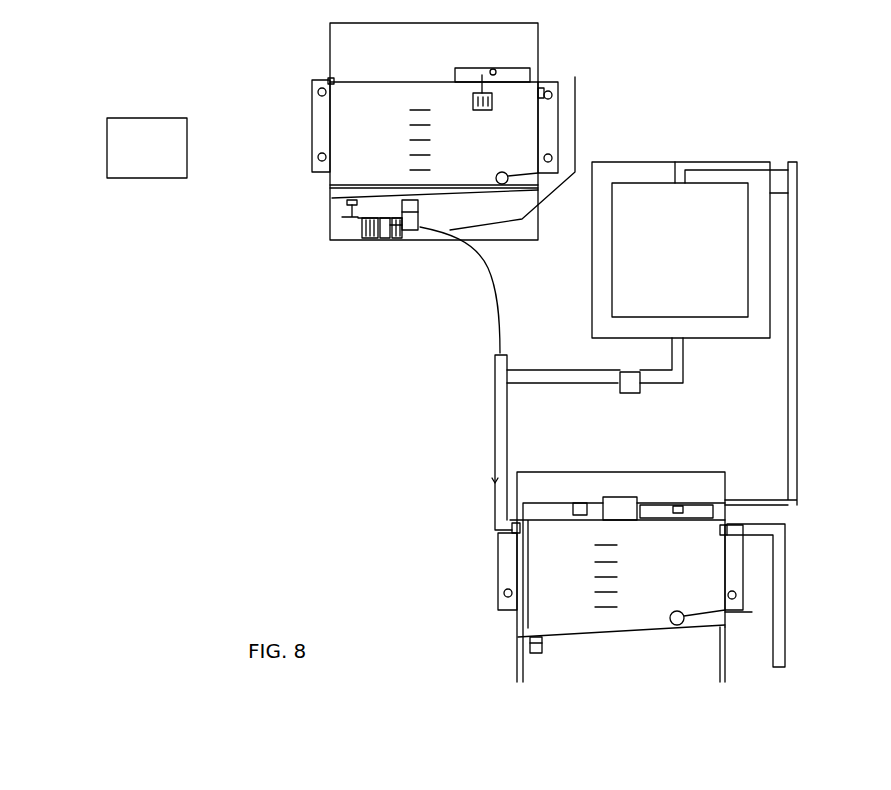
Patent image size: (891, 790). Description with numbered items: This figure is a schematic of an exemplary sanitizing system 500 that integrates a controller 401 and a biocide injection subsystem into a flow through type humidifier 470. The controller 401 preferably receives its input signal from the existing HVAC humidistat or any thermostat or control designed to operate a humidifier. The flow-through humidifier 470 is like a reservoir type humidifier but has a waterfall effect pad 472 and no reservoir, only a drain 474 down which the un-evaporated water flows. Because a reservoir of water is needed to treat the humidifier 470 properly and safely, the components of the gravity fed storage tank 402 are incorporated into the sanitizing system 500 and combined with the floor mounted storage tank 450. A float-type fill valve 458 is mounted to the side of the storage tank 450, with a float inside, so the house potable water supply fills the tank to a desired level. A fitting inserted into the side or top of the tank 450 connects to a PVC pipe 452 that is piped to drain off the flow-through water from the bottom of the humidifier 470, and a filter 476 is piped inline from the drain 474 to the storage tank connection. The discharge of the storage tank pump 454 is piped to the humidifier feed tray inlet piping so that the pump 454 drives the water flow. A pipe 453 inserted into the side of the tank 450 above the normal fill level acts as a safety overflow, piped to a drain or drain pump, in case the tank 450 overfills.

The controller 401 is at (140, 123).
The gravity fed storage tank 402 is at (583, 38).
The sanitizing system 500 is at (740, 82).
The flow through type humidifier 470 is at (740, 155).
The waterfall effect pad 472 is at (730, 280).
The drain 474 is at (680, 353).
The filter 476 is at (627, 393).
The storage tank pump 454 is at (620, 507).
The pipe 453 is at (788, 535).
The floor mounted storage tank 450 is at (590, 640).
The PVC pipe 452 is at (548, 655).
The float-type fill valve 458 is at (690, 628).